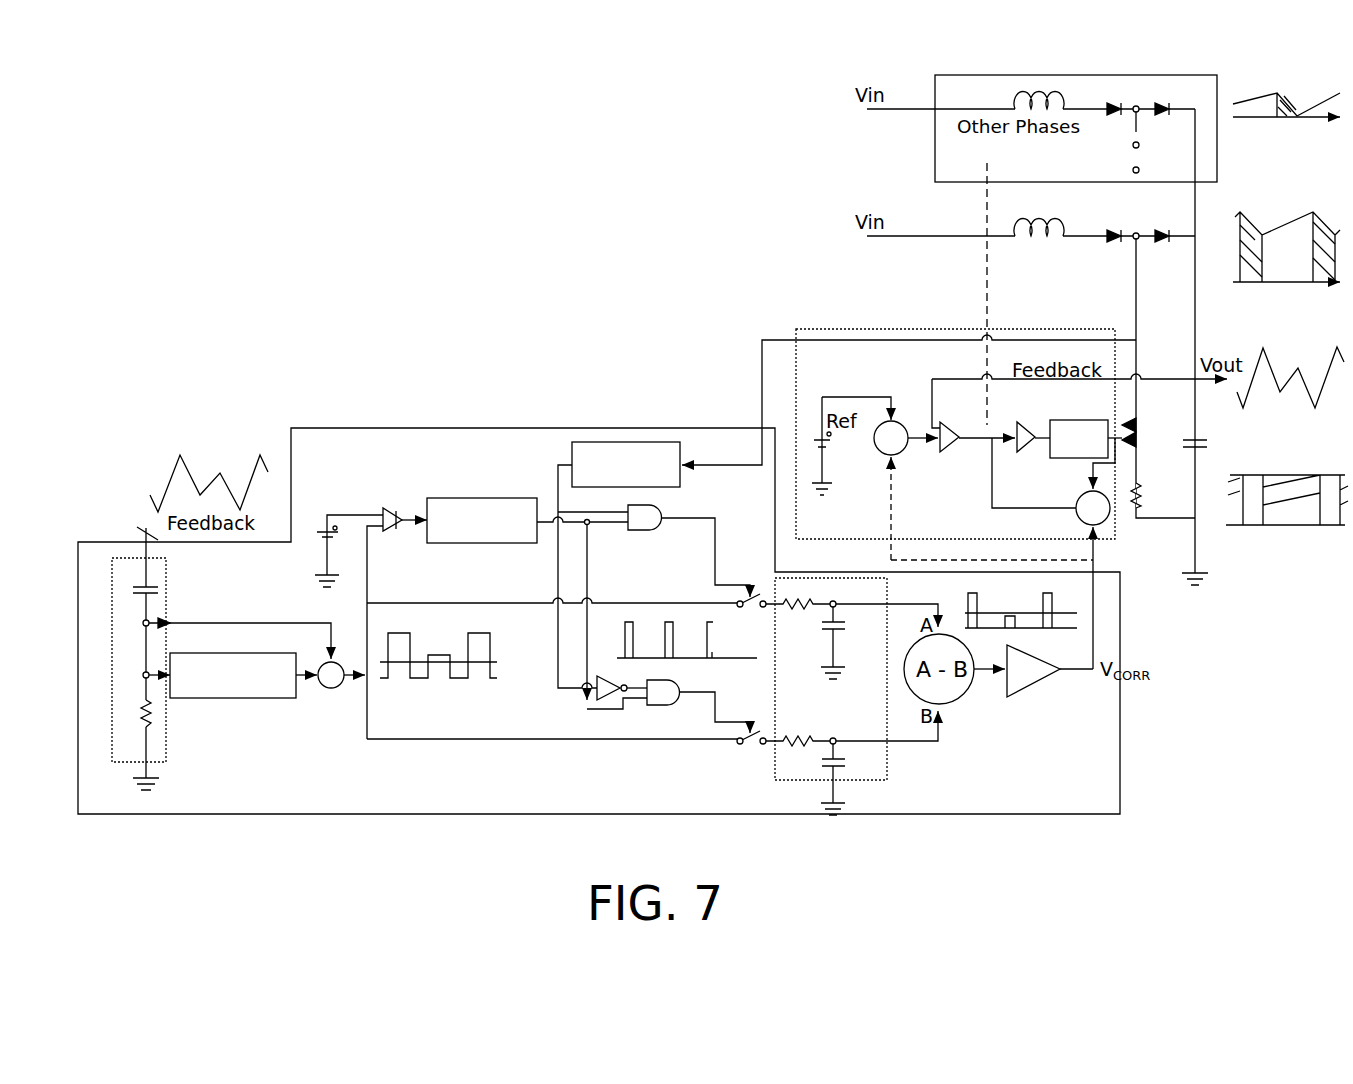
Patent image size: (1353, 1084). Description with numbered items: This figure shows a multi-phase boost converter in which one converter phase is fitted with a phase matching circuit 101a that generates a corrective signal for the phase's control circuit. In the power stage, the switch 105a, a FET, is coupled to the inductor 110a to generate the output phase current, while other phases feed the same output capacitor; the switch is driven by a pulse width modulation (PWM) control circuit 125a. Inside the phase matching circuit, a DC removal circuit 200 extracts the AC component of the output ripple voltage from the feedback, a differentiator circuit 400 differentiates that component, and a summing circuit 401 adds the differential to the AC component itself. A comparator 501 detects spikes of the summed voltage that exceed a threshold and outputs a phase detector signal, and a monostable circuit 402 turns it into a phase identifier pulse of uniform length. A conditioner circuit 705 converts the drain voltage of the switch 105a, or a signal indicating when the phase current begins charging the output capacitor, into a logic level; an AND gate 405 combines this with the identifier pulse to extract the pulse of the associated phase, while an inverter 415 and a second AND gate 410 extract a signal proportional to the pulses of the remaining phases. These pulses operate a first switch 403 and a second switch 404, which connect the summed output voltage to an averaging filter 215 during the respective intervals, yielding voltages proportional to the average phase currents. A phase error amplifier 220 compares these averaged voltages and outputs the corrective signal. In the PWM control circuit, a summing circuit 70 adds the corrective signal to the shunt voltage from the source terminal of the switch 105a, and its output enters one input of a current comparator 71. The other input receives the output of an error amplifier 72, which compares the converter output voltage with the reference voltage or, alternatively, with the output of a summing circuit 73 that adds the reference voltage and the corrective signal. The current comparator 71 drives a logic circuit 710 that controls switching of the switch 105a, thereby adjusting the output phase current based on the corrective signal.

The inductor 110a is at (996, 220).
The logic circuit 710 is at (1082, 417).
The pulse width modulation (PWM) control circuit 125a is at (786, 307).
The error amplifier 72 is at (942, 406).
The summing circuit 73 is at (872, 412).
The current comparator 71 is at (1031, 451).
The summing circuit 70 is at (1110, 525).
The switch 105a is at (1148, 442).
The phase matching circuit 101a is at (350, 418).
The conditioner circuit 705 is at (618, 438).
The AND gate 405 is at (612, 498).
The monostable circuit 402 is at (482, 500).
The comparator 501 is at (360, 530).
The DC removal circuit 200 is at (123, 555).
The differentiator circuit 400 is at (230, 700).
The summing circuit 401 is at (331, 696).
The inverter 415 is at (590, 702).
The second AND gate 410 is at (665, 710).
The first switch 403 is at (746, 618).
The second switch 404 is at (738, 760).
The averaging filter 215 is at (857, 696).
The phase error amplifier 220 is at (1039, 702).